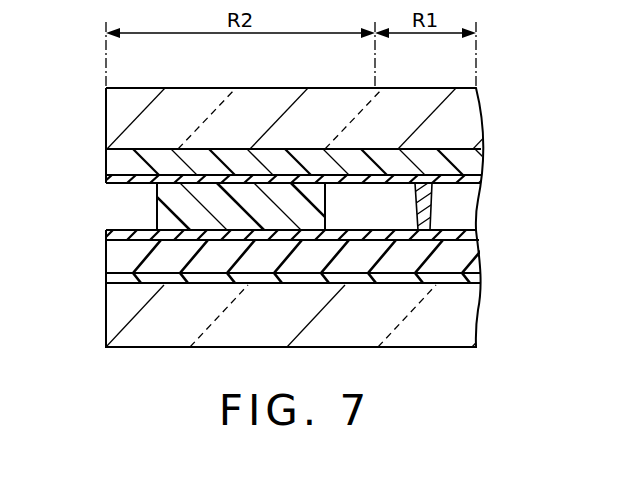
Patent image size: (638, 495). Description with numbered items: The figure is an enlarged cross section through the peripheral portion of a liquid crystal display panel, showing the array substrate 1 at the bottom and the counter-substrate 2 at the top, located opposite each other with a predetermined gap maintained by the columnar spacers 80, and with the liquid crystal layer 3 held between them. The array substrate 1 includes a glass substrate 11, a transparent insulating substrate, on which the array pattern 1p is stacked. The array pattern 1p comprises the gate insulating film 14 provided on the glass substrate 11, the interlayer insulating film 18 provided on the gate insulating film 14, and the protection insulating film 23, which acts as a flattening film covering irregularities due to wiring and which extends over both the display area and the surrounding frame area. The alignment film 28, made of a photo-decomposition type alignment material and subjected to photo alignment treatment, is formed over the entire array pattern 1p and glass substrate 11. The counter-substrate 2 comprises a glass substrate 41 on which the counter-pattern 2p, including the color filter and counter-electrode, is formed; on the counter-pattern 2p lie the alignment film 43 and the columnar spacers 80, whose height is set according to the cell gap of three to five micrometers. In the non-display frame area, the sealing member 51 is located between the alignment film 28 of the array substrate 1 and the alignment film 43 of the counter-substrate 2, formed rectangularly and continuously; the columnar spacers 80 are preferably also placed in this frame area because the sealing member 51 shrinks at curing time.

The array substrate 1 is at (289, 284).
The array pattern 1p is at (289, 265).
The counter-substrate 2 is at (299, 159).
The counter-pattern 2p is at (118, 163).
The liquid crystal layer 3 is at (309, 145).
The glass substrate 11 is at (115, 318).
The gate insulating film 14 is at (251, 279).
The interlayer insulating film 18 is at (113, 280).
The protection insulating film 23 is at (110, 252).
The alignment film 28 is at (465, 227).
The glass substrate 41 is at (112, 121).
The alignment film 43 is at (482, 187).
The sealing member 51 is at (157, 203).
The columnar spacer 80 is at (424, 186).